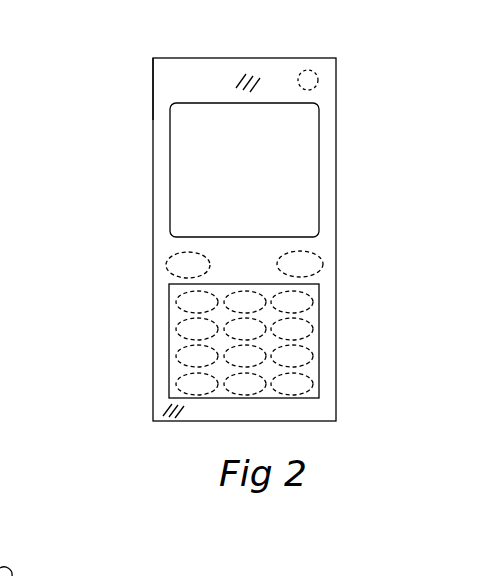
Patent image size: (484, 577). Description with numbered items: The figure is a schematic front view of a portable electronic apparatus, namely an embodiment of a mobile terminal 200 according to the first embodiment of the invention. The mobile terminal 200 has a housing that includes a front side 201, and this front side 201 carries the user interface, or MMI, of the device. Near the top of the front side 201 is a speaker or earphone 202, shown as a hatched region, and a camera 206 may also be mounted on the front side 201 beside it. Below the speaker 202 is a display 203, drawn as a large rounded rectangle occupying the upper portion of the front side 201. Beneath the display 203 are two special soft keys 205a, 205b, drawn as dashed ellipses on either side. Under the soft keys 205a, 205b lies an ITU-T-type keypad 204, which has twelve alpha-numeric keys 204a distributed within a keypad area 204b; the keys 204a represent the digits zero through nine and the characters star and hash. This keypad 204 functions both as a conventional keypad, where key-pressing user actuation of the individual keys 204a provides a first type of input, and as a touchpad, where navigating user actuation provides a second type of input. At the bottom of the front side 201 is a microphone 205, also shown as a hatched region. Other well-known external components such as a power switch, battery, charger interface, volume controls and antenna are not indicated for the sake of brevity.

The mobile terminal 200 is at (158, 48).
The front side 201 is at (160, 80).
The speaker 202 is at (238, 68).
The display 203 is at (172, 150).
The keypad 204 is at (168, 295).
The alpha-numeric keys 204a is at (308, 355).
The keypad area 204b is at (170, 322).
The microphone 205 is at (162, 410).
The soft key 205a is at (166, 264).
The soft key 205b is at (322, 263).
The camera 206 is at (306, 68).